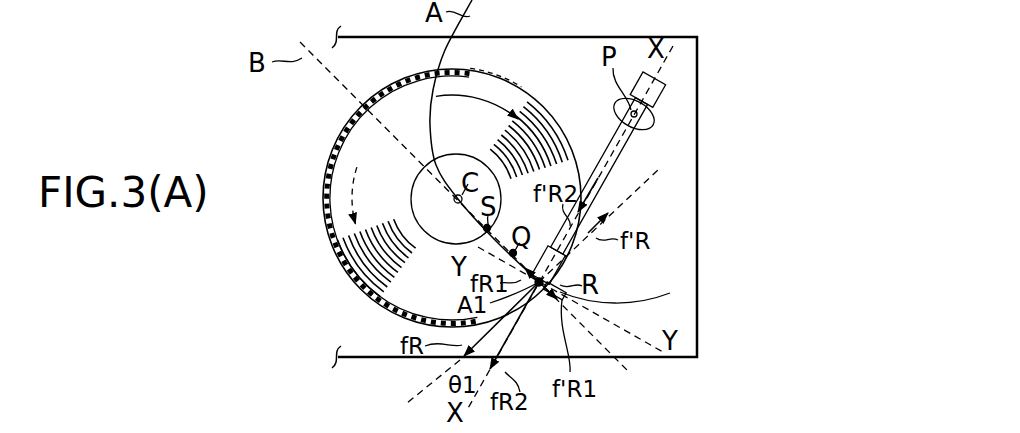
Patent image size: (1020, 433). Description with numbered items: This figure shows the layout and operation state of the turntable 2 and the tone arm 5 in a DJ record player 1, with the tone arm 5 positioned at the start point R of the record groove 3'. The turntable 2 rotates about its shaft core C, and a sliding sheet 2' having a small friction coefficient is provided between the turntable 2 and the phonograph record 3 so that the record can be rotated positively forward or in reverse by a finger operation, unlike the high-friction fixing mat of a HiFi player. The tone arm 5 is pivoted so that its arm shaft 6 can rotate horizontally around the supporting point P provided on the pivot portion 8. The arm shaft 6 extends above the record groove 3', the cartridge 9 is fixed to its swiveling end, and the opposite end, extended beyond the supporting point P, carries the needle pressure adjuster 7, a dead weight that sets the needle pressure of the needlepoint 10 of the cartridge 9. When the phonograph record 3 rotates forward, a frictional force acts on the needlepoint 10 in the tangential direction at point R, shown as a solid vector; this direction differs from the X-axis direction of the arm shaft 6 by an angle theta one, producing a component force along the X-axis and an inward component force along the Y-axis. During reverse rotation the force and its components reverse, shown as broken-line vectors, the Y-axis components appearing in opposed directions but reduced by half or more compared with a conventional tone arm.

The record player 1 is at (684, 268).
The turntable 2 is at (419, 198).
The sliding sheet 2' is at (402, 195).
The phonograph record 3 is at (422, 148).
The record groove 3' is at (529, 115).
The tone arm 5 is at (636, 212).
The arm shaft 6 is at (596, 165).
The needle pressure adjuster 7 is at (668, 87).
The pivot portion 8 is at (656, 124).
The cartridge 9 is at (570, 266).
The needlepoint 10 is at (561, 298).